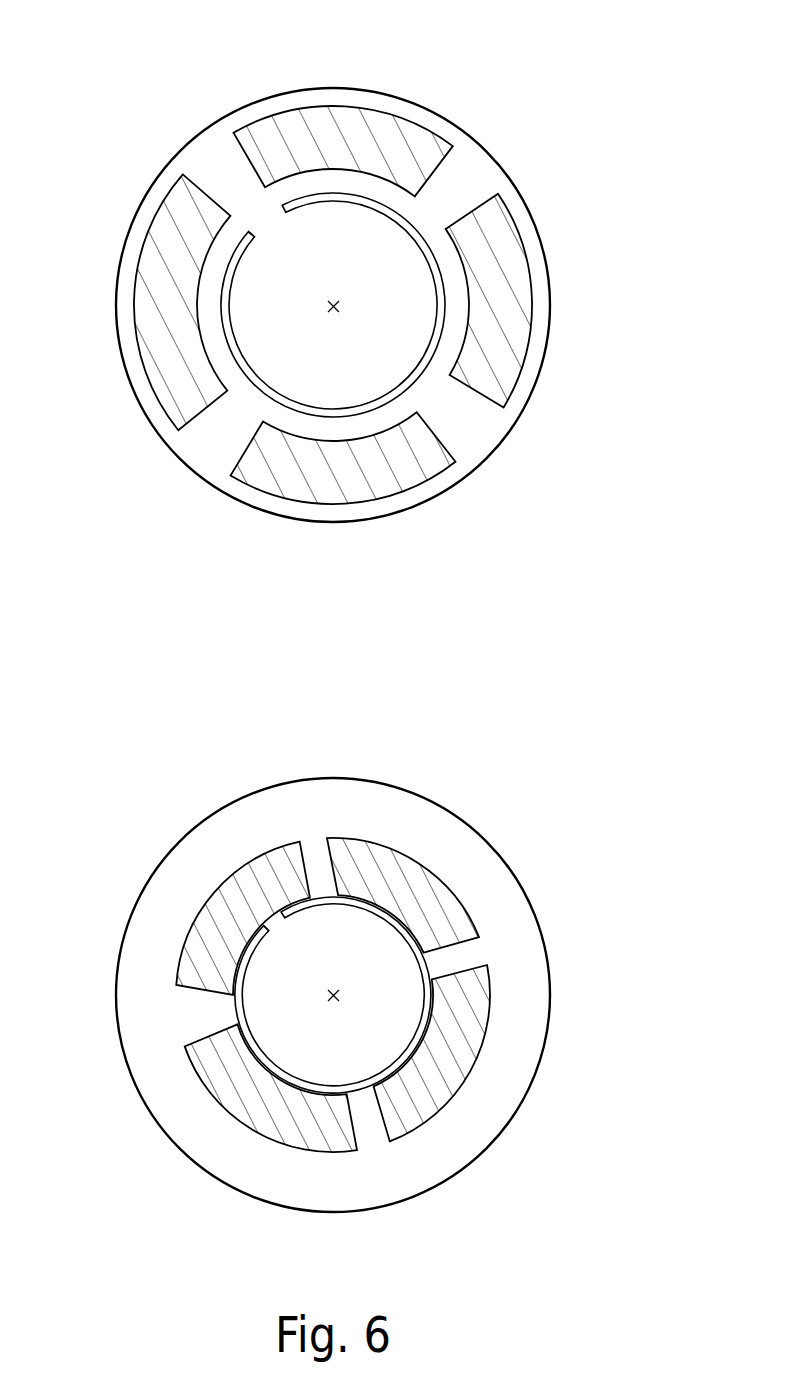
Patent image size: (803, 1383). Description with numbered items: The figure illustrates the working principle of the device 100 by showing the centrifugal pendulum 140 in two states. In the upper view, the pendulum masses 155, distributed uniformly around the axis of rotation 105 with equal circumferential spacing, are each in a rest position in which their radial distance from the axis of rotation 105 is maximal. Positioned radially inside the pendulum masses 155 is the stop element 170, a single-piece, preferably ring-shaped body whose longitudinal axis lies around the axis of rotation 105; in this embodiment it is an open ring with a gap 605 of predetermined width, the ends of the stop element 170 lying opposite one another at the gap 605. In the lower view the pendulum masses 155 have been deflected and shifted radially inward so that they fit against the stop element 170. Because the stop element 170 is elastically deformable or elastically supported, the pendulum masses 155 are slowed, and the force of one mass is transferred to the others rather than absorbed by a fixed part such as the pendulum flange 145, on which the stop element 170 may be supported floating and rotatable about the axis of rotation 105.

The device 100 is at (162, 57).
The axis of rotation 105 is at (335, 300).
The centrifugal pendulum 140 is at (468, 105).
The pendulum flange 145 is at (550, 293).
The pendulum masses 155 is at (432, 143).
The stop element 170 is at (412, 392).
The gap 605 is at (238, 182).